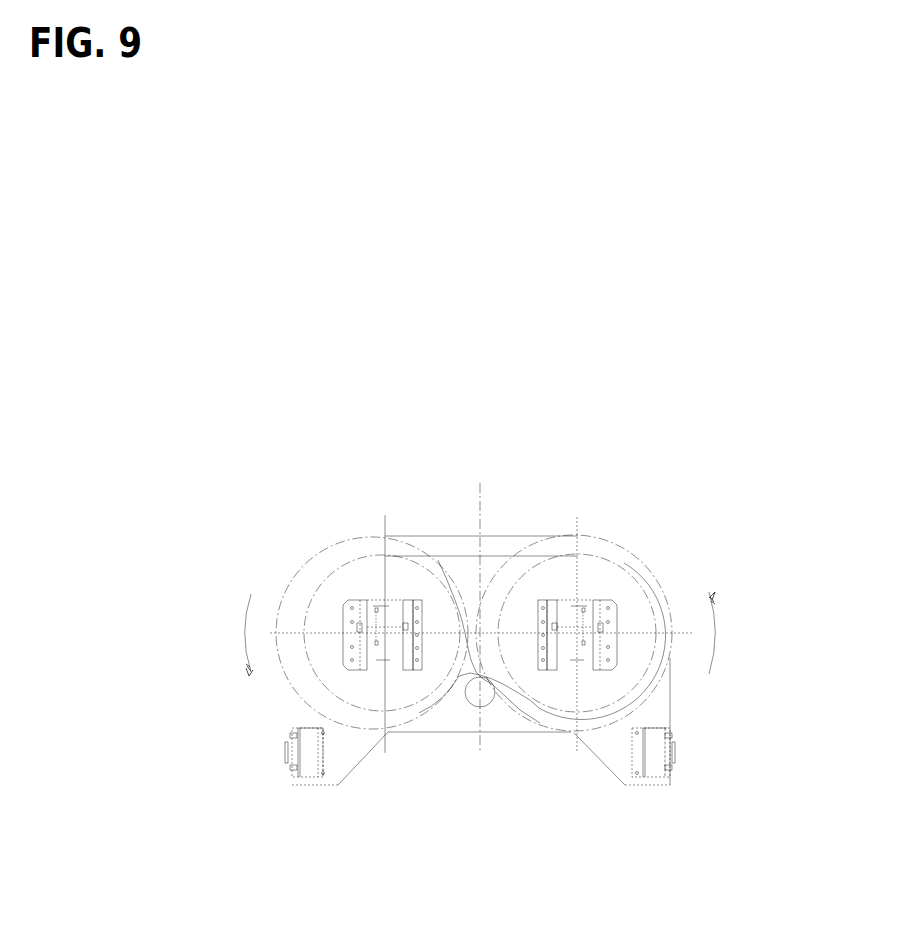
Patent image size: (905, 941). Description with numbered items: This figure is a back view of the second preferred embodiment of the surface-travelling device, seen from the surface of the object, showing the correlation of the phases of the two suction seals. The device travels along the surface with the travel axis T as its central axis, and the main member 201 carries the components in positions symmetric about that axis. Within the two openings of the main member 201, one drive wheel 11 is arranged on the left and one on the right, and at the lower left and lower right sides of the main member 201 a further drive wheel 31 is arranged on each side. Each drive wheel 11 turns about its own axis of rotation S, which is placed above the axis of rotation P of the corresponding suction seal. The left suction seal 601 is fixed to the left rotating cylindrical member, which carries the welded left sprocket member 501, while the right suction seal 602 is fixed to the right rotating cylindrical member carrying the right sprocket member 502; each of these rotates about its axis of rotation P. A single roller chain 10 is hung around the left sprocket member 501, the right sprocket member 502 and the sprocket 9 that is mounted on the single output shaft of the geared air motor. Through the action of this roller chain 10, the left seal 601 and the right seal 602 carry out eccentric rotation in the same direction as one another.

The sprocket 9 is at (484, 703).
The roller chain 10 is at (460, 683).
The drive wheel 11 is at (386, 603).
The drive wheel 31 is at (310, 775).
The main member 201 is at (657, 700).
The left sprocket member 501 is at (623, 568).
The right sprocket member 502 is at (338, 567).
The left suction seal 601 is at (503, 573).
The right suction seal 602 is at (303, 582).
The travel axis T is at (480, 505).
The axis of rotation of drive wheel S is at (388, 608).
The axis of rotation of suction seal P is at (382, 600).